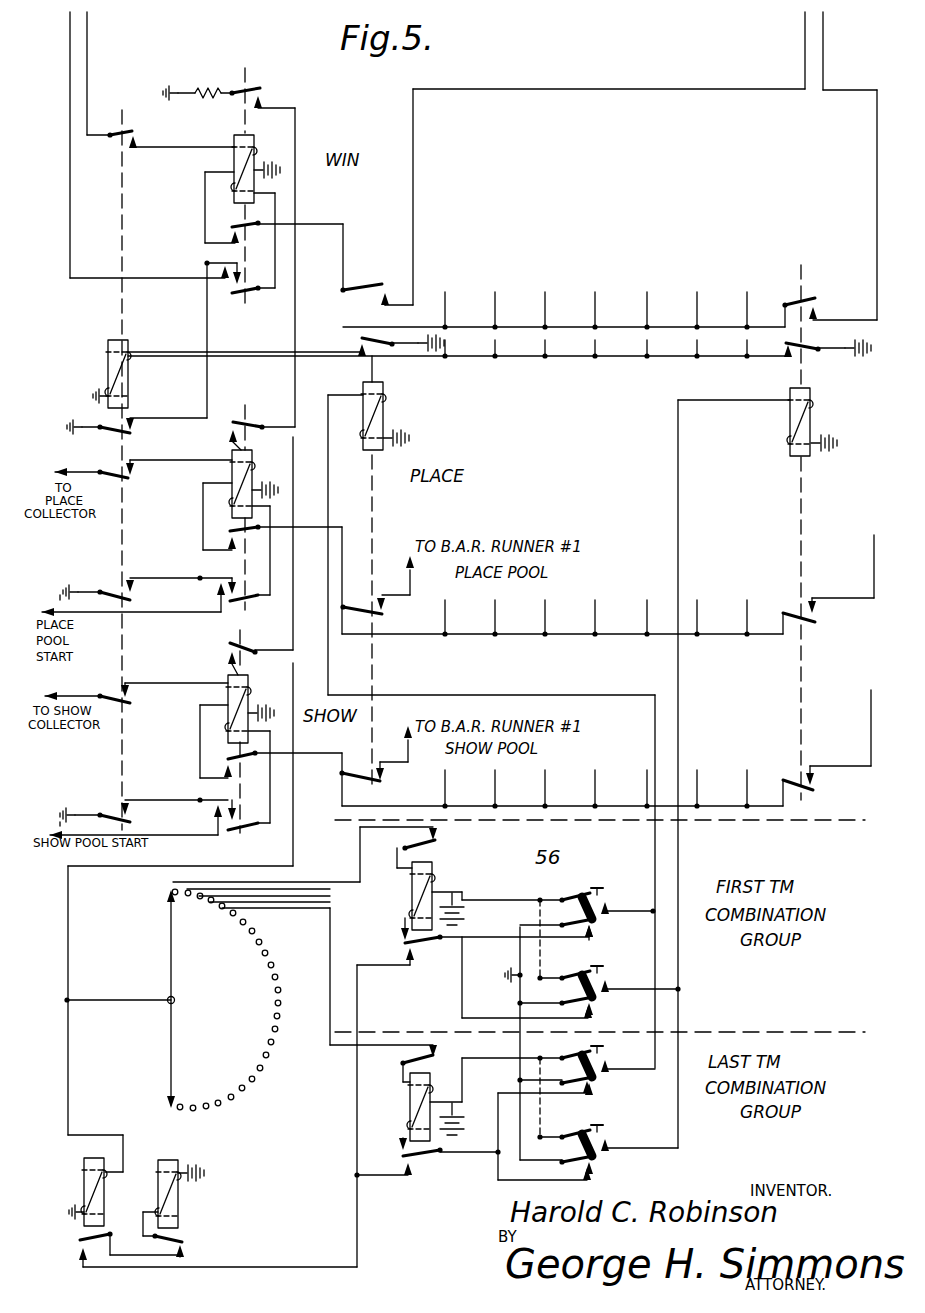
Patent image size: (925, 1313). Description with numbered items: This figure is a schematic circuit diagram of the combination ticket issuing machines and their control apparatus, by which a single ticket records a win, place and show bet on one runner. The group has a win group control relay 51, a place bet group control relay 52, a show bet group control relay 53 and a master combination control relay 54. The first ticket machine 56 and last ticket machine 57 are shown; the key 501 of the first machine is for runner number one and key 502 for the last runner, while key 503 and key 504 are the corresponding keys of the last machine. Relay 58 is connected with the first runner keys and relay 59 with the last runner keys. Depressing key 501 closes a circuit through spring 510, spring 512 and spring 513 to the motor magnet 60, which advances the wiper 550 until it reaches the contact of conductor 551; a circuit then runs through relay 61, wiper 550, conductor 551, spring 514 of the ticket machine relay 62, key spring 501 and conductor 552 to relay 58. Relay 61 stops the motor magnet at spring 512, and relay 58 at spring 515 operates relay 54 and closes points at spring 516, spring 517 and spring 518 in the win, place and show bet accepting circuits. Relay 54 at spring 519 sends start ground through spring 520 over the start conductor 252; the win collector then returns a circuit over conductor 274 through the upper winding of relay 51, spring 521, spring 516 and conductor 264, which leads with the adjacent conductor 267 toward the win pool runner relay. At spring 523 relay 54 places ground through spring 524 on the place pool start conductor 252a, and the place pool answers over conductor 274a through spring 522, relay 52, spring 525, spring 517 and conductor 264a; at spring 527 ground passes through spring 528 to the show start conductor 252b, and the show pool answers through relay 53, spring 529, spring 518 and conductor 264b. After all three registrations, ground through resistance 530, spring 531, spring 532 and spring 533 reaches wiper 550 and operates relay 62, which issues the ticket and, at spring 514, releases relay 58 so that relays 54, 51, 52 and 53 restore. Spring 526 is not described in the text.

The start conductor of the win pool 252 is at (70, 40).
The conductor 274 is at (63, 700).
The conductor 264 is at (805, 38).
The conductor 267 is at (826, 34).
The resistance 530 is at (213, 93).
The spring of relay 51 531 is at (256, 92).
The spring of relay 51 520 is at (135, 136).
The win group control relay 51 is at (255, 145).
The spring of relay 51 521 is at (232, 226).
The spring of relay 58 516 is at (380, 284).
The spring of relay 58 515 is at (364, 336).
The master combination control relay 54 is at (130, 365).
The spring of relay 54 519 is at (132, 432).
The spring of relay 52 532 is at (231, 422).
The conductor 274a is at (75, 471).
The spring of relay 54 522 is at (132, 490).
The place bet group control relay 52 is at (252, 462).
The spring of relay 52 525 is at (233, 530).
The spring of relay 52 524 is at (218, 576).
The spring of relay 54 523 is at (134, 592).
The place pool start conductor 252a is at (60, 598).
The relay 58 is at (385, 415).
The conductor 264a is at (396, 596).
The spring of relay 58 517 is at (382, 612).
The relay 59 is at (790, 412).
The spring of relay 53 533 is at (235, 648).
The show bet group control relay 53 is at (228, 676).
The contact 526 is at (126, 716).
The spring of relay 53 529 is at (221, 754).
The spring of relay 53 528 is at (217, 796).
The spring of relay 54 527 is at (128, 815).
The start conductor of the show pool 252b is at (60, 824).
The conductor 264b is at (404, 769).
The spring of relay 58 518 is at (380, 785).
The conductor 552 is at (510, 695).
The conductor 551 is at (345, 882).
The wiper 550 is at (172, 958).
The spring of relay 62 514 is at (437, 852).
The ticket machine relay 62 is at (420, 885).
The first ticket machine 56 is at (515, 1038).
The key 501 is at (594, 890).
The spring 510 is at (592, 937).
The key 502 is at (600, 978).
The key 503 is at (603, 1063).
The key 504 is at (598, 1132).
The last ticket machine 57 is at (678, 1126).
The relay 61 is at (84, 1170).
The motor magnet 60 is at (178, 1190).
The spring 513 is at (183, 1244).
The spring 512 is at (80, 1241).